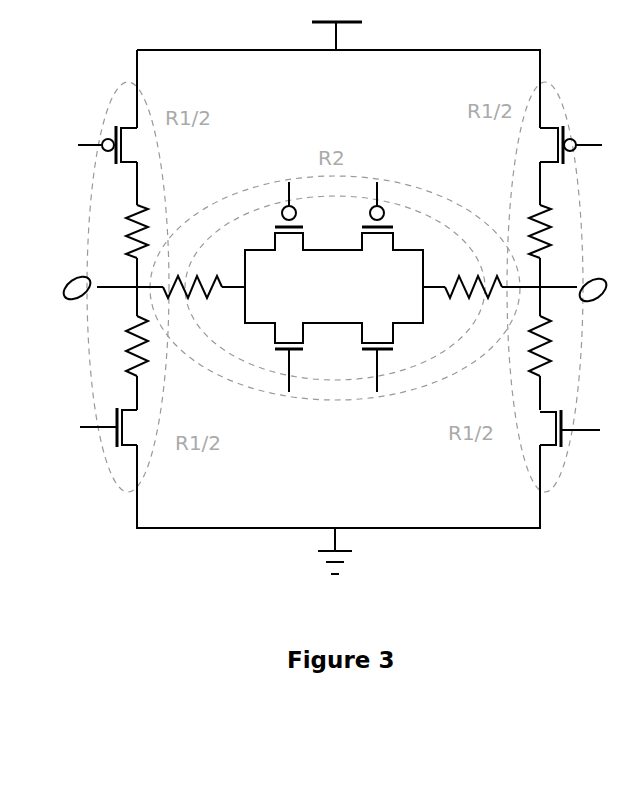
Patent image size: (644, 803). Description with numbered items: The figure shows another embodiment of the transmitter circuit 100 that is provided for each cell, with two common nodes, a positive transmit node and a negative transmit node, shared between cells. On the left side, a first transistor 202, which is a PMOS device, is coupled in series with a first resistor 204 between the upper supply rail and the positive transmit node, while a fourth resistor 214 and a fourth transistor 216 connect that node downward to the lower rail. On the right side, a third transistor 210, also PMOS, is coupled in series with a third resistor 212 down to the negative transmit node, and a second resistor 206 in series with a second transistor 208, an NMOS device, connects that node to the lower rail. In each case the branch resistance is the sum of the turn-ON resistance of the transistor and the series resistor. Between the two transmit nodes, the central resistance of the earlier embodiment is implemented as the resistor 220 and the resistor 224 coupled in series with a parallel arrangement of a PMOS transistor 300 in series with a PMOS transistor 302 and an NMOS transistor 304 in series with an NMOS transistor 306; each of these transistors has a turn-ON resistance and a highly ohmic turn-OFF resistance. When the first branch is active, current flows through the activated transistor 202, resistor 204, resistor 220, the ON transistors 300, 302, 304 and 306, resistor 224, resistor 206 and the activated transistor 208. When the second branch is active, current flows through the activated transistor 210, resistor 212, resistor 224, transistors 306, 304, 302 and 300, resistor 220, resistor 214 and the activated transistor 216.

The transmitter circuit 100 is at (121, 570).
The first transistor 202 is at (125, 141).
The first resistor 204 is at (116, 231).
The second resistor 206 is at (562, 346).
The second transistor 208 is at (575, 435).
The third transistor 210 is at (556, 141).
The third resistor 212 is at (562, 231).
The fourth resistor 214 is at (115, 346).
The fourth transistor 216 is at (99, 434).
The resistor 220 is at (192, 272).
The resistor 224 is at (473, 303).
The PMOS transistor 300 is at (288, 224).
The PMOS transistor 302 is at (376, 224).
The NMOS transistor 304 is at (286, 358).
The NMOS transistor 306 is at (375, 358).